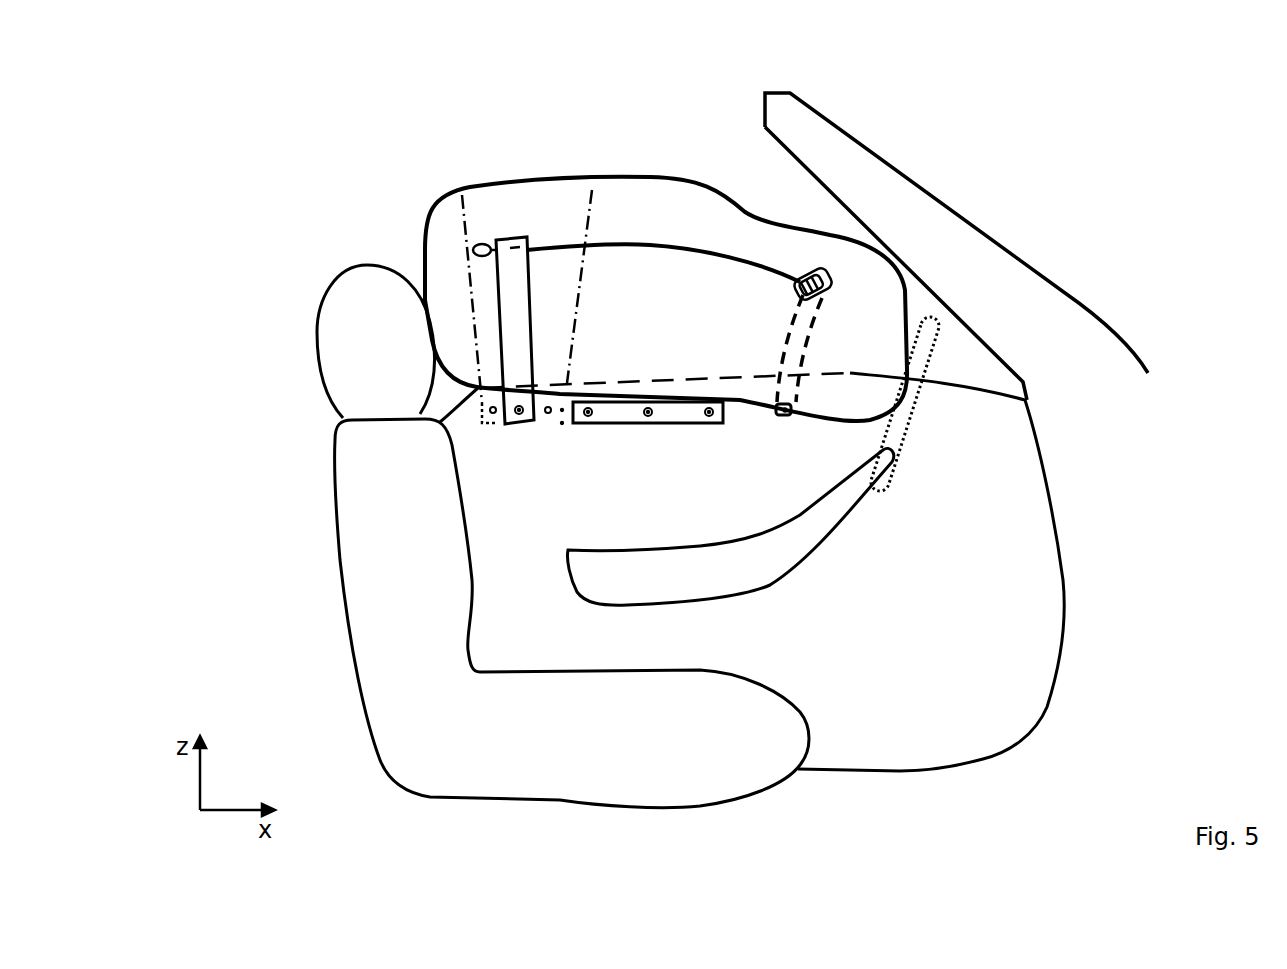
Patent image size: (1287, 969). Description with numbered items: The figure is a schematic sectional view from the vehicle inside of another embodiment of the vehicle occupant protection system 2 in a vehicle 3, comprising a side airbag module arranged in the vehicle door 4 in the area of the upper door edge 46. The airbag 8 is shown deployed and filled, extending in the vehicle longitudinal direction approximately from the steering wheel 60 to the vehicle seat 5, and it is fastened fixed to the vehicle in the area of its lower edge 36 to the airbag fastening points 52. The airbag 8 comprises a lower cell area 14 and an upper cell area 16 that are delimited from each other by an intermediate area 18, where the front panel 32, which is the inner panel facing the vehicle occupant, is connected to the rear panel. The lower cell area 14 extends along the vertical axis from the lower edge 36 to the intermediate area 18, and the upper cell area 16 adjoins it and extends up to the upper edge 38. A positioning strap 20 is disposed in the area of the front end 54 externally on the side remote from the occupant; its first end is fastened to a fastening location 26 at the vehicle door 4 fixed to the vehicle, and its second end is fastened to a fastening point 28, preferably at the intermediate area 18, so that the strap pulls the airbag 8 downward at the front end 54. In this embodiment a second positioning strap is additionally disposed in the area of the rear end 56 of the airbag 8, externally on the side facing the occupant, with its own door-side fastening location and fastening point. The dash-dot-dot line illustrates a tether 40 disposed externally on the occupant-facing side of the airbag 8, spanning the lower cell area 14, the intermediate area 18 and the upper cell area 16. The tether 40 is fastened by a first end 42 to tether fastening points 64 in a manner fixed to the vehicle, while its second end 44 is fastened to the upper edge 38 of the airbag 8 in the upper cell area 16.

The vehicle occupant protection system 2 is at (392, 118).
The vehicle 3 is at (1097, 357).
The vehicle door 4 is at (938, 712).
The vehicle seat 5 is at (393, 738).
The airbag 8 is at (418, 209).
The lower cell area 14 is at (690, 303).
The upper cell area 16 is at (724, 232).
The intermediate area 18 is at (636, 243).
The positioning strap 20 is at (795, 358).
The fastening location 26 is at (783, 414).
The fastening point 28 is at (823, 277).
The front panel 32 is at (737, 334).
The lower edge 36 is at (750, 403).
The upper edge 38 is at (765, 218).
The tether 40 is at (556, 218).
The first end 42 is at (499, 415).
The second end 44 is at (530, 190).
The upper door edge 46 is at (848, 375).
The airbag fastening points 52 is at (648, 448).
The front end 54 is at (860, 330).
The rear end 56 is at (455, 297).
The steering wheel 60 is at (900, 423).
The tether fastening points 64 is at (493, 413).